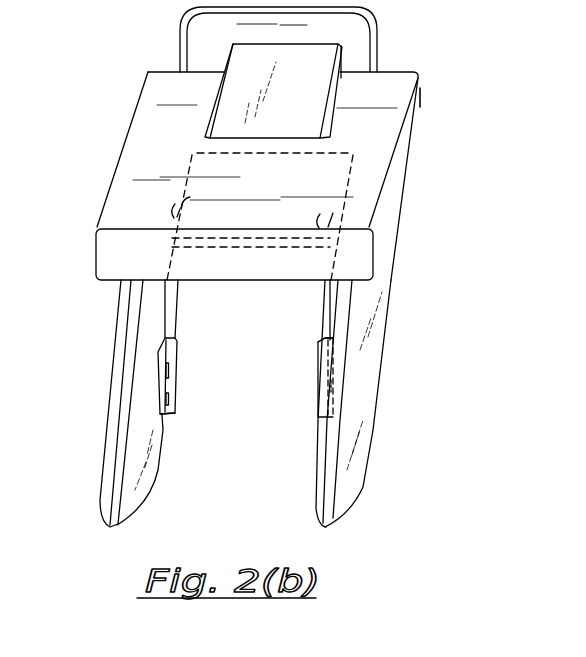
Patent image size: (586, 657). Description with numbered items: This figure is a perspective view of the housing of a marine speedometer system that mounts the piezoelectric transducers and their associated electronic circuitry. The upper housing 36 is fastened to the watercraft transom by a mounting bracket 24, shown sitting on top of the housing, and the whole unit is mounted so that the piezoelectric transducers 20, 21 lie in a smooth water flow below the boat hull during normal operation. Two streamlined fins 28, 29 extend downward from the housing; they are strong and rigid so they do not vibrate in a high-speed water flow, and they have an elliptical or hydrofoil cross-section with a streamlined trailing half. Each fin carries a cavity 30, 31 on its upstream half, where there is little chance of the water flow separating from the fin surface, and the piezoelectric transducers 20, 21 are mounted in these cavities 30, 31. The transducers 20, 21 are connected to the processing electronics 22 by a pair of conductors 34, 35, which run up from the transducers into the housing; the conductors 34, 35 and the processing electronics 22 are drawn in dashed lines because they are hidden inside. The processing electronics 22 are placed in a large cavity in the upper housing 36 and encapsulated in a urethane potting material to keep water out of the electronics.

The piezoelectric transducer 20 is at (165, 383).
The piezoelectric transducer 21 is at (323, 373).
The processing electronics 22 is at (218, 165).
The mounting bracket 24 is at (325, 53).
The streamlined fin 28 is at (147, 480).
The streamlined fin 29 is at (363, 462).
The cavity 30 is at (162, 409).
The cavity 31 is at (320, 355).
The conductor 34 is at (165, 298).
The conductor 35 is at (327, 302).
The housing 36 is at (405, 163).